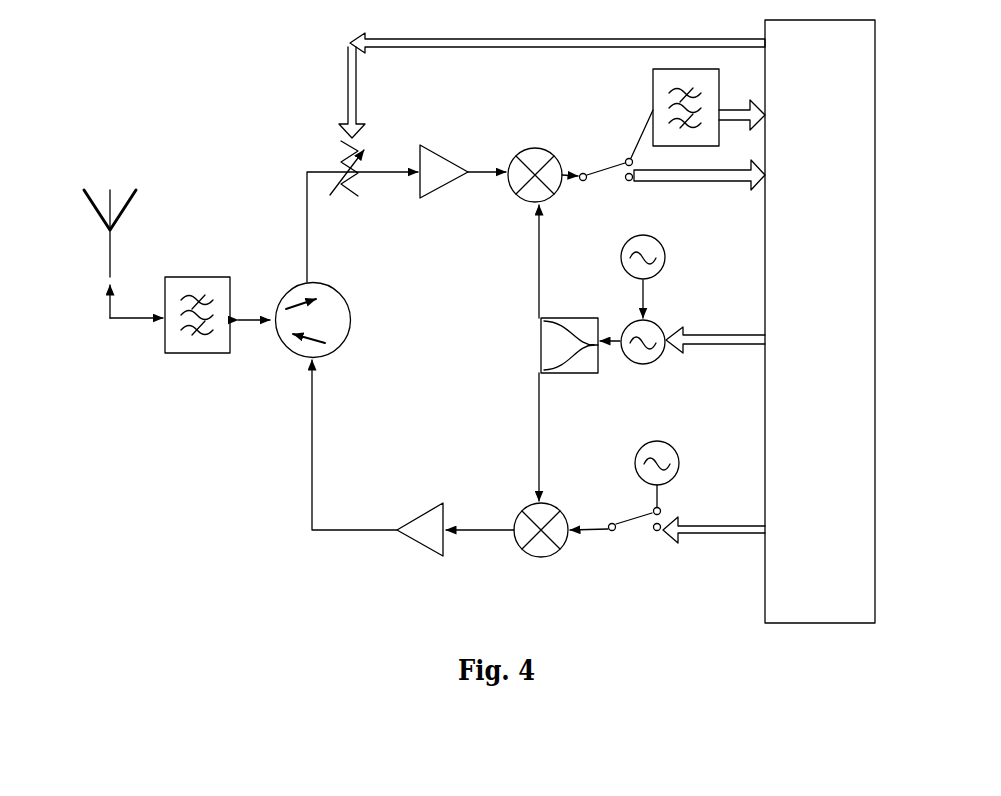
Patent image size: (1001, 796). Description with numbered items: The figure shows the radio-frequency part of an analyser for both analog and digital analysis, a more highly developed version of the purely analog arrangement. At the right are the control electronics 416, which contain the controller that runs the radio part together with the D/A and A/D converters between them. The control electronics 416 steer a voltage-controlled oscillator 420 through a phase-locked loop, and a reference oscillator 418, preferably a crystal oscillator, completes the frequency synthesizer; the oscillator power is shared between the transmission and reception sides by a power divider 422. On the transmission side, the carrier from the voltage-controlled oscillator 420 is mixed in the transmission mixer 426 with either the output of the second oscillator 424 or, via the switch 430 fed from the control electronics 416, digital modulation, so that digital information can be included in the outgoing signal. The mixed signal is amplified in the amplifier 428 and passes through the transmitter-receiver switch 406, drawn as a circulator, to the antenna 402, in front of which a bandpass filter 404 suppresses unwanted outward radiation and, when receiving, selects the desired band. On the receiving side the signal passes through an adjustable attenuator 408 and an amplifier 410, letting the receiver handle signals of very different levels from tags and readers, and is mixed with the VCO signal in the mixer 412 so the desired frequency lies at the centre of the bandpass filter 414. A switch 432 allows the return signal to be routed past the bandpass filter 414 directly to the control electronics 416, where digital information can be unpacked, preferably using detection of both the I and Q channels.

The antenna 402 is at (88, 207).
The bandpass filter 404 is at (165, 343).
The transmitter-receiver switch 406 is at (283, 343).
The adjustable attenuator 408 is at (345, 141).
The amplifier 410 is at (440, 190).
The mixer 412 is at (512, 195).
The bandpass filter 414 is at (651, 80).
The control electronics 416 is at (848, 546).
The reference oscillator 418 is at (660, 270).
The voltage-controlled oscillator 420 is at (643, 365).
The power divider 422 is at (542, 333).
The second oscillator 424 is at (679, 462).
The transmission mixer 426 is at (568, 517).
The amplifier 428 is at (422, 510).
The switch 430 is at (633, 530).
The switch 432 is at (601, 170).